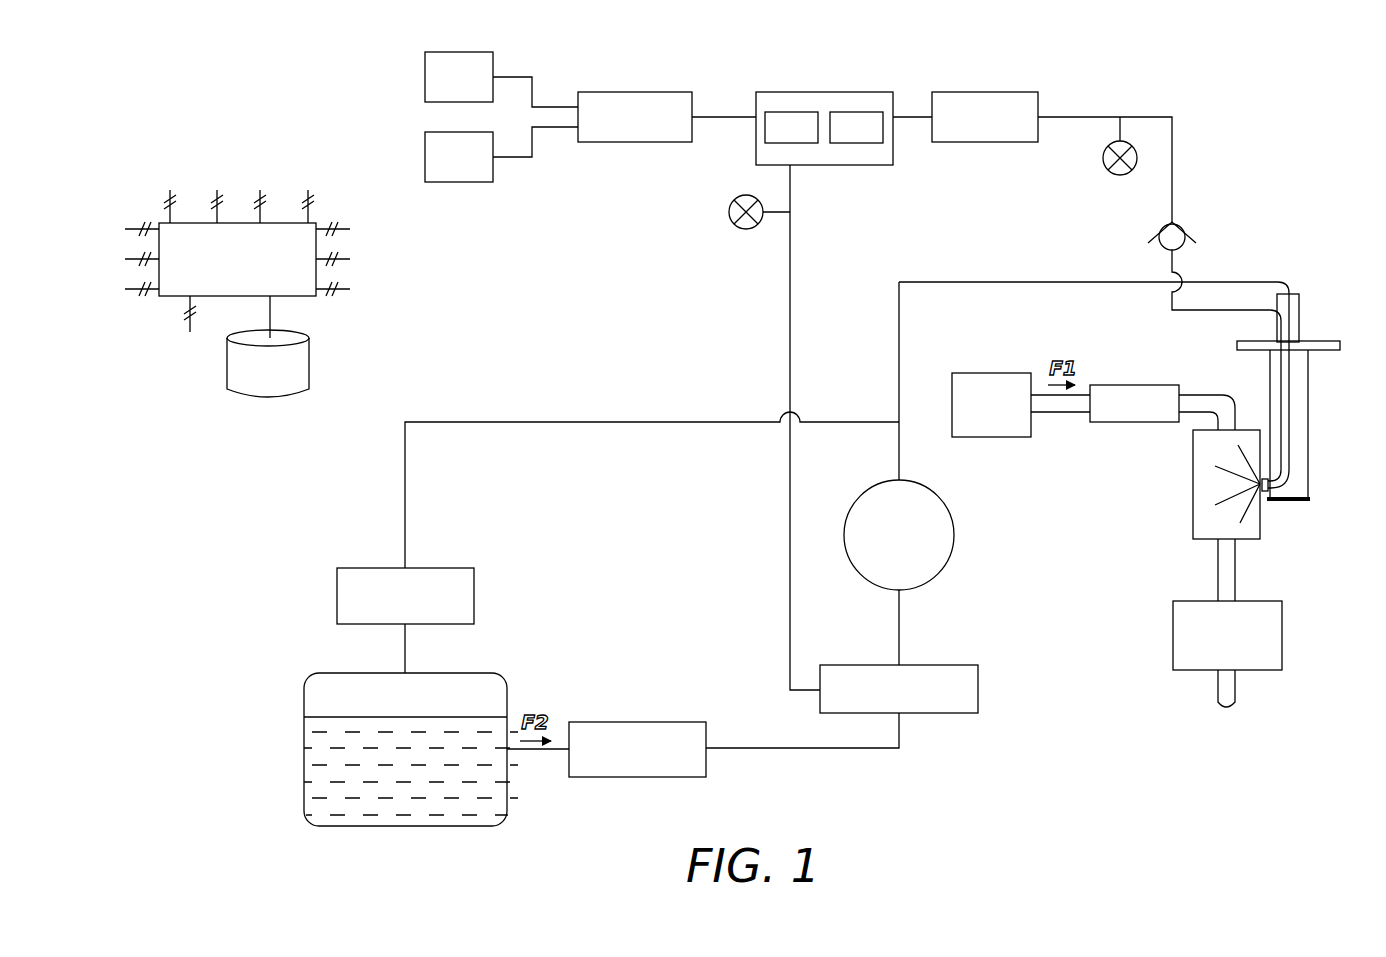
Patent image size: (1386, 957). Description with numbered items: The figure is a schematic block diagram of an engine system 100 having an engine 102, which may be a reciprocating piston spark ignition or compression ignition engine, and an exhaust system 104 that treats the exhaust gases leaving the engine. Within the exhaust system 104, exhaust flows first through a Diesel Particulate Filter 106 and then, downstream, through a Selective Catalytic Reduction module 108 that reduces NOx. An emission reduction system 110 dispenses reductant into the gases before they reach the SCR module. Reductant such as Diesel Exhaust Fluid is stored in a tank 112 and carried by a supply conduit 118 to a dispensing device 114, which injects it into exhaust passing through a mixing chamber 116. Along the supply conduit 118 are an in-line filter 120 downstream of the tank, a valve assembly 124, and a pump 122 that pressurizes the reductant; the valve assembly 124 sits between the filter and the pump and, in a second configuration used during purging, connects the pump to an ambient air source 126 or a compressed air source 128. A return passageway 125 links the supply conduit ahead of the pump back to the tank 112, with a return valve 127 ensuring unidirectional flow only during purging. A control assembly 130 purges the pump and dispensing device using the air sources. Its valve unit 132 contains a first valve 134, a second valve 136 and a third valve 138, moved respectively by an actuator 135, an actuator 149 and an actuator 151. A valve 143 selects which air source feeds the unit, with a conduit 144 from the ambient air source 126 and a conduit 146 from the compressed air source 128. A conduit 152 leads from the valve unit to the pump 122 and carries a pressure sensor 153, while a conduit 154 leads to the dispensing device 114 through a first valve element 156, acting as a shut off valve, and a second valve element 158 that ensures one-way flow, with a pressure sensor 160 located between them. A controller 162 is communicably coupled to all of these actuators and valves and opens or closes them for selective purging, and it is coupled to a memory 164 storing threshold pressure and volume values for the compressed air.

The engine system 100 is at (1309, 177).
The engine 102 is at (974, 418).
The exhaust system 104 is at (1157, 488).
The Diesel Particulate Filter 106 is at (1118, 415).
The Selective Catalytic Reduction module 108 is at (1210, 648).
The emission reduction system 110 is at (338, 484).
The tank 112 is at (304, 740).
The dispensing device 114 is at (1268, 492).
The mixing chamber 116 is at (1193, 530).
The supply conduit 118 is at (742, 748).
The in-line filter 120 is at (620, 763).
The pump 122 is at (882, 548).
The valve assembly 124 is at (916, 702).
The return passageway 125 is at (538, 420).
The ambient air source 126 is at (442, 170).
The return valve 127 is at (422, 609).
The compressed air source 128 is at (442, 90).
The control assembly 130 is at (820, 92).
The valve unit 132 is at (775, 145).
The first valve 134 is at (351, 229).
The actuator 135 is at (170, 194).
The second valve 136 is at (351, 289).
The third valve 138 is at (124, 229).
The valve 143 is at (652, 135).
The conduit 144 is at (520, 160).
The conduit 146 is at (520, 76).
The actuator 149 is at (260, 194).
The actuator 151 is at (190, 329).
The conduit 152 is at (790, 303).
The pressure sensor 153 is at (729, 212).
The conduit 154 is at (1080, 117).
The first valve element 156 is at (1002, 135).
The second valve element 158 is at (1208, 205).
The pressure sensor 160 is at (1103, 164).
The controller 162 is at (220, 273).
The memory 164 is at (251, 384).